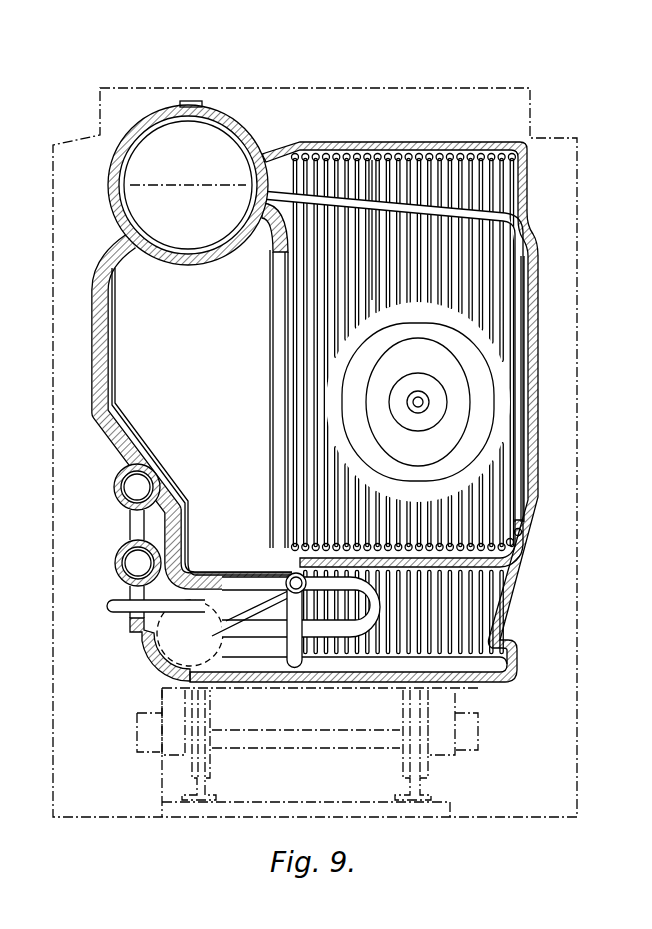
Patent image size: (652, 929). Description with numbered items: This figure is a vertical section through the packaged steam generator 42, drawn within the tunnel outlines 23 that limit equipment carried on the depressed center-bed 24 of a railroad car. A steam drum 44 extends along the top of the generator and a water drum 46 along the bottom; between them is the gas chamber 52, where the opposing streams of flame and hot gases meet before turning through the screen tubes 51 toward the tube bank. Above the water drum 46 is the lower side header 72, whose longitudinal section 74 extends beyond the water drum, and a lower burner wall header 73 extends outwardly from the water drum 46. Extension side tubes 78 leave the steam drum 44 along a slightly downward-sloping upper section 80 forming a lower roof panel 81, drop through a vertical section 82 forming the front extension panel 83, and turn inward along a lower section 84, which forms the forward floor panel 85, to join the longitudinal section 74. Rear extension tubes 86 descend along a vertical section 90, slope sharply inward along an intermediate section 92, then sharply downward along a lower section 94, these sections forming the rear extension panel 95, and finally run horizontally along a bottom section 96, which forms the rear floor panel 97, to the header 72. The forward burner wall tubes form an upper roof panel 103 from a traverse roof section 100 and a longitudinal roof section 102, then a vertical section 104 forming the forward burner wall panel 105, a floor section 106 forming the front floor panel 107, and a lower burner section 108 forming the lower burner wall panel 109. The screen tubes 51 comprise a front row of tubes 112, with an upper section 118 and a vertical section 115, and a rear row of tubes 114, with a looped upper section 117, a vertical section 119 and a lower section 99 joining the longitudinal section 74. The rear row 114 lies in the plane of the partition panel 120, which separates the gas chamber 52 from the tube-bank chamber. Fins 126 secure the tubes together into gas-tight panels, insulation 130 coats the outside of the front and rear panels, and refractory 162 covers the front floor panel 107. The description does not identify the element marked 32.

The tunnel outlines 23 is at (415, 90).
The depressed center-bed 24 is at (175, 758).
The fan motor 32 is at (418, 382).
The packaged steam generator 42 is at (94, 351).
The steam drum 44 is at (181, 122).
The water drum 46 is at (158, 648).
The screen tubes 51 is at (268, 441).
The gas chamber 52 is at (418, 402).
The lower side header 72 is at (223, 613).
The lower burner wall header 73 is at (504, 661).
The longitudinal section 74 is at (288, 652).
The extension side tubes 78 is at (350, 206).
The upper section 80 is at (386, 212).
The lower roof panel 81 is at (453, 215).
The vertical section 82 is at (531, 375).
The front extension panel 83 is at (538, 413).
The lower section 84 is at (460, 552).
The forward floor panel 85 is at (395, 570).
The rear extension tubes 86 is at (116, 351).
The vertical section 90 is at (114, 388).
The intermediate section 92 is at (142, 445).
The lower section 94 is at (179, 523).
The rear extension panel 95 is at (118, 416).
The bottom section 96 is at (243, 579).
The rear floor panel 97 is at (220, 573).
The lower section 99 is at (287, 573).
The traverse roof section 100 is at (454, 160).
The longitudinal roof section 102 is at (376, 160).
The upper roof panel 103 is at (419, 152).
The vertical section 104 is at (378, 313).
The forward burner wall panel 105 is at (459, 303).
The floor section 106 is at (464, 556).
The front floor panel 107 is at (420, 542).
The lower burner section 108 is at (492, 599).
The lower burner wall panel 109 is at (476, 623).
The front row of tubes 112 is at (280, 378).
The rear row of tubes 114 is at (280, 352).
The vertical section 115 is at (280, 328).
The upper section 117 is at (270, 234).
The upper section 118 is at (280, 254).
The vertical section 119 is at (280, 411).
The partition panel 120 is at (283, 309).
The fins 126 is at (112, 315).
The insulation 130 is at (145, 526).
The refractory 162 is at (352, 547).